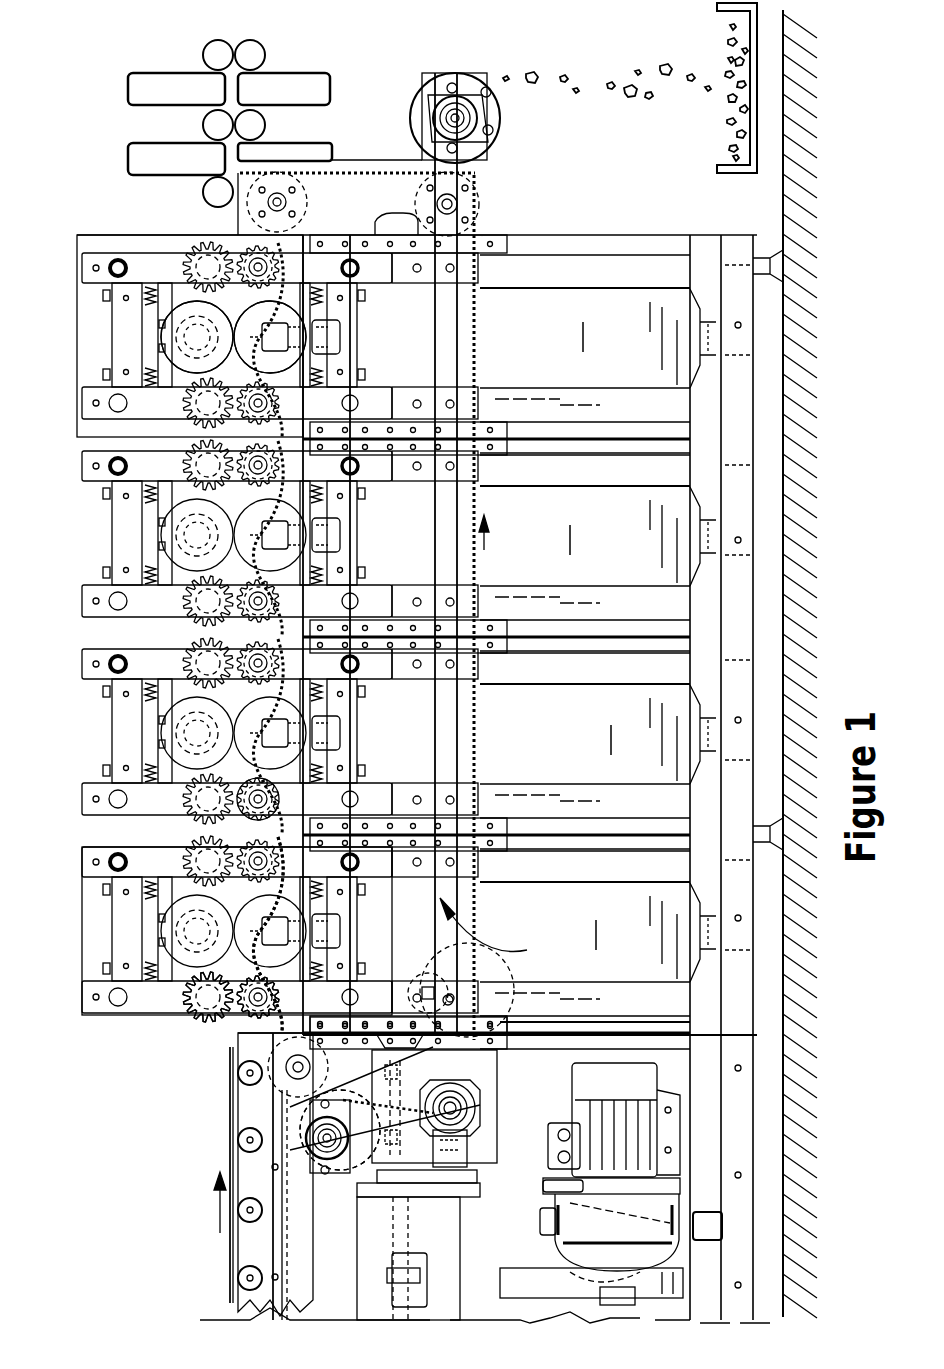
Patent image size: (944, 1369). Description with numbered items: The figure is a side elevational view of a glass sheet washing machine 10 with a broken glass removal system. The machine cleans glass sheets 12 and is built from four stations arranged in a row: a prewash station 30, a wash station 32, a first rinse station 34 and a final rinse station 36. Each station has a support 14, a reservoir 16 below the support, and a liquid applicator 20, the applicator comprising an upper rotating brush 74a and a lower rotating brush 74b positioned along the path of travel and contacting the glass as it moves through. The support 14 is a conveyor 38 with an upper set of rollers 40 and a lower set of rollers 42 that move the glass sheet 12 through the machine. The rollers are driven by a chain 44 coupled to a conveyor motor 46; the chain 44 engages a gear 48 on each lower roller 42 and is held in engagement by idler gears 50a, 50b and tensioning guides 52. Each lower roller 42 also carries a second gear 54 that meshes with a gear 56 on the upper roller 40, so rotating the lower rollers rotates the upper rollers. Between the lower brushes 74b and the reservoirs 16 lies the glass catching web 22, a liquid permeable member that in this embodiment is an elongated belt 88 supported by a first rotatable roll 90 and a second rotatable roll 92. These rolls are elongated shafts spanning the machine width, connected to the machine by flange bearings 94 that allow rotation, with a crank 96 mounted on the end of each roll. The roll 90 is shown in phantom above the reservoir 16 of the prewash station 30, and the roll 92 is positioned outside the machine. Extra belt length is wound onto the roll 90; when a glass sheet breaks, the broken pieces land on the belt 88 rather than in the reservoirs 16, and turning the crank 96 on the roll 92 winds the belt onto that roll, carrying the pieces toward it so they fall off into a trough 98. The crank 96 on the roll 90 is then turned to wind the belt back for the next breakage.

The glass sheet washing machine 10 is at (57, 740).
The glass sheet 12 is at (227, 1250).
The support 14 is at (179, 1095).
The reservoir 16 is at (558, 635).
The liquid applicator 20 is at (126, 930).
The glass catching web 22 is at (495, 934).
The prewash station 30 is at (78, 934).
The wash station 32 is at (88, 722).
The first rinse station 34 is at (88, 530).
The final rinse station 36 is at (108, 337).
The conveyor 38 is at (226, 1055).
The upper rollers 40 is at (193, 1036).
The lower rollers 42 is at (237, 1088).
The chain 44 is at (385, 1115).
The conveyor motor 46 is at (490, 1110).
The gear 48 is at (300, 800).
The idler gear 50a is at (305, 1092).
The idler gear 50b is at (248, 212).
The tensioning guides 52 is at (300, 507).
The second gear 54 is at (150, 1020).
The gear 56 is at (165, 1033).
The upper rotating brush 74a is at (190, 320).
The lower rotating brush 74b is at (292, 330).
The elongated belt 88 is at (478, 690).
The first rotatable roll 90 is at (433, 963).
The second rotatable roll 92 is at (432, 118).
The flange bearings 94 is at (440, 138).
The crank 96 is at (500, 102).
The trough 98 is at (735, 176).